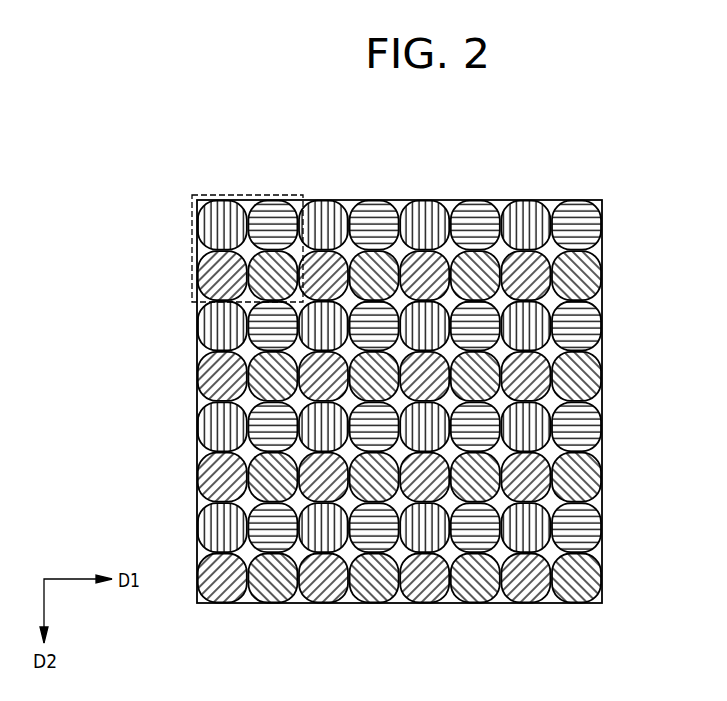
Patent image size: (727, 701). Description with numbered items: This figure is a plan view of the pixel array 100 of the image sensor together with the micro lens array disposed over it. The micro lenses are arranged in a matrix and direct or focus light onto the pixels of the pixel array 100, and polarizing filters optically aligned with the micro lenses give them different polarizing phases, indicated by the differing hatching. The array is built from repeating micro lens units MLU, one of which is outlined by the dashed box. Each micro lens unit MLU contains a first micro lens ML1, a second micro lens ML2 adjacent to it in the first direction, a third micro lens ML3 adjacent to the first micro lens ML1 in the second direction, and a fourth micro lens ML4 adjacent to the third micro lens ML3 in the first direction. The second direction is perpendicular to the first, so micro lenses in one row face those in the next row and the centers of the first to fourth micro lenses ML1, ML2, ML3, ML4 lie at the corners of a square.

The pixel array 100 is at (603, 250).
The micro lens unit MLU is at (192, 203).
The first micro lens ML1 is at (222, 210).
The second micro lens ML2 is at (273, 210).
The third micro lens ML3 is at (209, 257).
The fourth micro lens ML4 is at (225, 276).